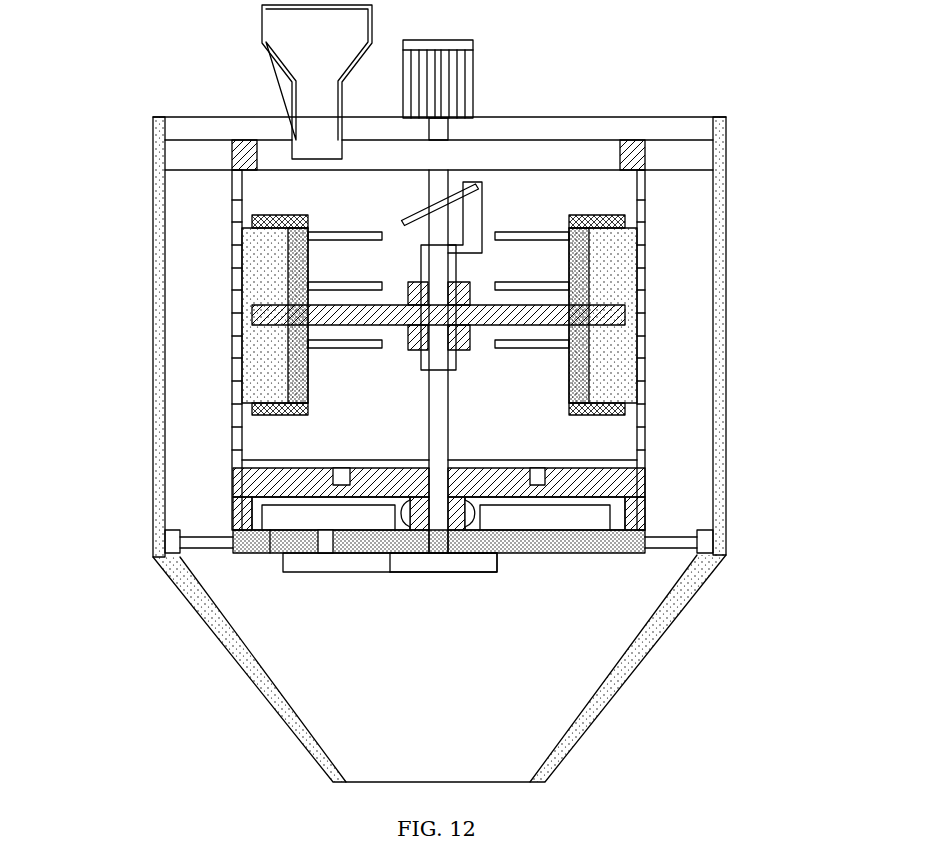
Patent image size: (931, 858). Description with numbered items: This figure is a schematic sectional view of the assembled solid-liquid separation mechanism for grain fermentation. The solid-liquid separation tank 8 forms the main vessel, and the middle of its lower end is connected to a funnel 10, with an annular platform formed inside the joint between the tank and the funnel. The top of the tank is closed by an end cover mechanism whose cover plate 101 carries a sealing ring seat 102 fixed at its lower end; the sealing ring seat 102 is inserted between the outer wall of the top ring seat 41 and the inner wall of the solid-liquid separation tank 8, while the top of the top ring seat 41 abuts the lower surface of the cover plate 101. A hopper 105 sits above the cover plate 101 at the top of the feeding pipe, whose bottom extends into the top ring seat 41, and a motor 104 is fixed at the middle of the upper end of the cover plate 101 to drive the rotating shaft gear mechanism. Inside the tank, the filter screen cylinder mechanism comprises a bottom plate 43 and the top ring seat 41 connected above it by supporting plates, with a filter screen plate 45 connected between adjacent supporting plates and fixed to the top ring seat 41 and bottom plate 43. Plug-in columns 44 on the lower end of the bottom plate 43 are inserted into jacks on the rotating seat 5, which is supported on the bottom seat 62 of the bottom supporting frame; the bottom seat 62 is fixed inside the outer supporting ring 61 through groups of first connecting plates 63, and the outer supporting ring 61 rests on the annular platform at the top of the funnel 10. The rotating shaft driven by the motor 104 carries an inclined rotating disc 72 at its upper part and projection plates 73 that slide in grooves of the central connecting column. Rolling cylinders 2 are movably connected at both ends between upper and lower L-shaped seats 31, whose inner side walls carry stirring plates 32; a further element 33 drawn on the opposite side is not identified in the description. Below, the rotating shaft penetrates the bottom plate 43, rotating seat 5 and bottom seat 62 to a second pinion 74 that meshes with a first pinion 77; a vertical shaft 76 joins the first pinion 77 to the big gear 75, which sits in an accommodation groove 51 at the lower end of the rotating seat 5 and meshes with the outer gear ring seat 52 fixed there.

The cover plate 101 is at (185, 115).
The sealing ring seat 102 is at (188, 160).
The solid-liquid separation tank 8 is at (158, 313).
The funnel 10 is at (240, 655).
The hopper 105 is at (260, 48).
The motor 104 is at (465, 80).
The filter screen plate 45 is at (233, 205).
The top ring seat 41 is at (643, 152).
The rolling cylinders 2 is at (188, 315).
The L-shaped seats 31 is at (295, 268).
The right grinding roller 33 is at (643, 320).
The stirring plates 32 is at (353, 347).
The projection plates 73 is at (458, 367).
The inclined rotating disc 72 is at (418, 213).
The bottom plate 43 is at (317, 463).
The rotating seat 5 is at (255, 478).
The plug-in columns 44 is at (643, 482).
The big gear 75 is at (293, 515).
The accommodation groove 51 is at (605, 508).
The outer gear ring seat 52 is at (508, 548).
The bottom seat 62 is at (552, 553).
The vertical shaft 76 is at (332, 548).
The first pinion 77 is at (365, 565).
The second pinion 74 is at (447, 560).
The outer supporting ring 61 is at (172, 540).
The first connecting plates 63 is at (672, 540).